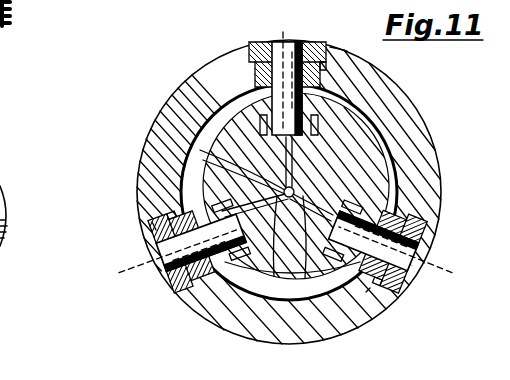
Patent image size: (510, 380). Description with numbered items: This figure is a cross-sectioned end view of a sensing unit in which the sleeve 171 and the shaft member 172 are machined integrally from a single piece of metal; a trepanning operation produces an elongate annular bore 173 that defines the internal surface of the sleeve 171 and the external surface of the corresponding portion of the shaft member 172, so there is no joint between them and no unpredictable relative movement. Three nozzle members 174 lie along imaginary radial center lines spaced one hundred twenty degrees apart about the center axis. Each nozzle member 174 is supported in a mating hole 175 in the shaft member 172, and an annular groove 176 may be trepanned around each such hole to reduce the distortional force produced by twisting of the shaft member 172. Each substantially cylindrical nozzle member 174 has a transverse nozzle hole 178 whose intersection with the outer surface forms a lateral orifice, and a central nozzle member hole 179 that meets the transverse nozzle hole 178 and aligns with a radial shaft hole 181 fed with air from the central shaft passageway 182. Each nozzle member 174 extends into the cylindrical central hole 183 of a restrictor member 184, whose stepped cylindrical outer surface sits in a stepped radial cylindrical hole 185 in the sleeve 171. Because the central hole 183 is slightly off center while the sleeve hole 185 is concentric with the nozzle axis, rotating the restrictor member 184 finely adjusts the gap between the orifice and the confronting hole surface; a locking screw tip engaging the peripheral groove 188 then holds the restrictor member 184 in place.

The sleeve 171 is at (398, 102).
The shaft member 172 is at (335, 158).
The elongate annular bore 173 is at (198, 183).
The nozzle member 174 is at (230, 66).
The mating hole 175 is at (302, 109).
The annular groove 176 is at (338, 144).
The transverse nozzle hole 178 is at (282, 155).
The central nozzle member hole 179 is at (277, 108).
The radial shaft hole 181 is at (213, 178).
The central shaft passageway 182 is at (292, 282).
The cylindrical central hole 183 is at (300, 43).
The restrictor member 184 is at (258, 41).
The stepped radial cylindrical hole 185 is at (347, 51).
The peripheral groove 188 is at (317, 63).